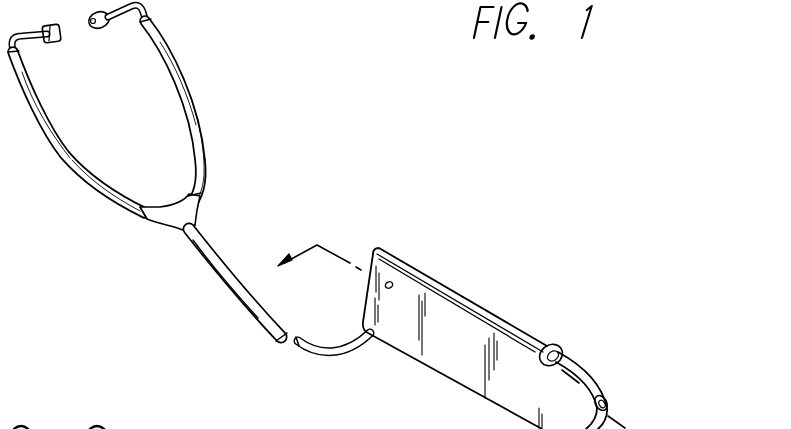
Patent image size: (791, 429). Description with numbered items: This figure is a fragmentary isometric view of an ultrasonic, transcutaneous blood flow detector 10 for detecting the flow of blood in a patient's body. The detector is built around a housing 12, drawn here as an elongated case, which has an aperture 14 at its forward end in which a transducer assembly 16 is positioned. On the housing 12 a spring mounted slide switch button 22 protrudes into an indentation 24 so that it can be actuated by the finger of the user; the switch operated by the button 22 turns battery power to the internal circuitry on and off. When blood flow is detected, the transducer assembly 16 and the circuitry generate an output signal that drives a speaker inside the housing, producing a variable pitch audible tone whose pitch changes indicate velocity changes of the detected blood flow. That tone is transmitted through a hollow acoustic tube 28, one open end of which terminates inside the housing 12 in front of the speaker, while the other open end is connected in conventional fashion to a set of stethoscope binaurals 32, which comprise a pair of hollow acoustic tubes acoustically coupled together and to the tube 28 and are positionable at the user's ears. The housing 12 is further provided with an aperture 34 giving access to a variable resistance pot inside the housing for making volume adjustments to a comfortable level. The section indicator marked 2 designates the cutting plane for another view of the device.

The blood flow detector 10 is at (580, 195).
The housing 12 is at (480, 297).
The aperture 14 is at (604, 395).
The transducer assembly 16 is at (607, 403).
The slide switch button 22 is at (556, 348).
The indentation 24 is at (565, 355).
The acoustic tube 28 is at (257, 323).
The stethoscope binaurals 32 is at (179, 89).
The aperture 34 is at (392, 286).
The section line 2- 2 is at (316, 246).